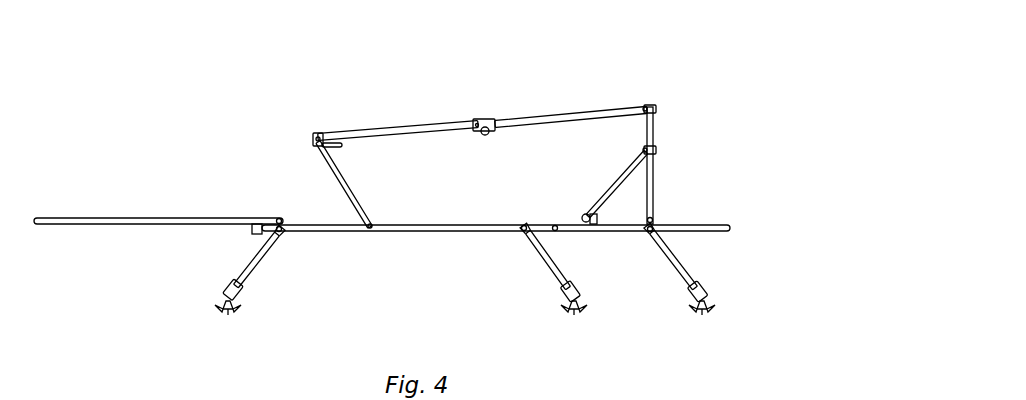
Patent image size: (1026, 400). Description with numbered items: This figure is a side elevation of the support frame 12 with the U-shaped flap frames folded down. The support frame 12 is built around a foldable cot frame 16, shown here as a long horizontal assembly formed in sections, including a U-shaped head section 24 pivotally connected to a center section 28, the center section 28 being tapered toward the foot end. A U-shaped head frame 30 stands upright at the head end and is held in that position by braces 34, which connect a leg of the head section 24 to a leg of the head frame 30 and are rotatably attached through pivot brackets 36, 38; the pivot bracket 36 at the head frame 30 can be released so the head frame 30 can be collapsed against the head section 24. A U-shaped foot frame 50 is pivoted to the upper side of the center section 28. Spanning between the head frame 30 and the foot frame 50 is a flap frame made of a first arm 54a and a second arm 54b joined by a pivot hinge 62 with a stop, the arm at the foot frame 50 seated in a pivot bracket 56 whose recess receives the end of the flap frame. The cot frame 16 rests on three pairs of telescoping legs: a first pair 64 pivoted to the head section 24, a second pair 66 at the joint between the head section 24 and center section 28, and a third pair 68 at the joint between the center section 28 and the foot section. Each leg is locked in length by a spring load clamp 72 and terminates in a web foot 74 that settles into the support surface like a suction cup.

The support frame 12 is at (634, 80).
The cot frame 16 is at (420, 240).
The head section 24 is at (618, 235).
The center section 28 is at (127, 225).
The head frame 30 is at (655, 185).
The braces 34 is at (609, 191).
The pivot bracket 36 is at (655, 106).
The pivot bracket 38 is at (583, 216).
The foot frame 50 is at (347, 183).
The first arm 54a is at (400, 126).
The second arm 54b is at (531, 112).
The pivot bracket 56 is at (313, 139).
The pivot hinge 62 is at (482, 118).
The first pair of telescoping legs 64 is at (690, 256).
The second pair of telescoping legs 66 is at (556, 251).
The third pair of telescoping legs 68 is at (262, 268).
The spring load clamp 72 is at (226, 288).
The web foot 74 is at (229, 312).